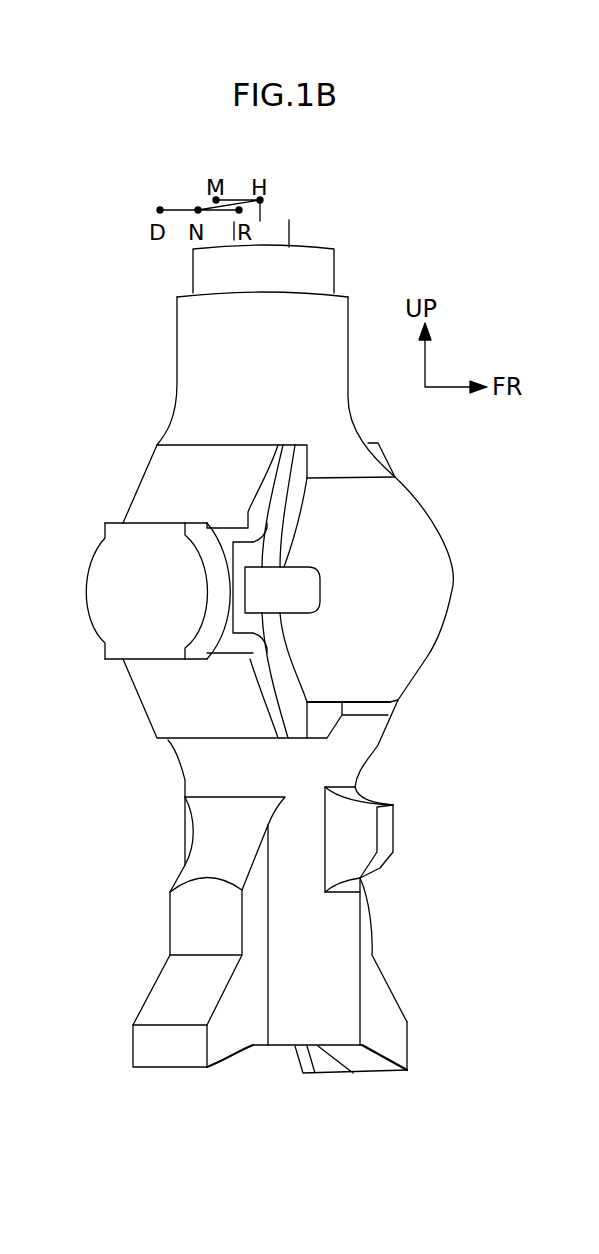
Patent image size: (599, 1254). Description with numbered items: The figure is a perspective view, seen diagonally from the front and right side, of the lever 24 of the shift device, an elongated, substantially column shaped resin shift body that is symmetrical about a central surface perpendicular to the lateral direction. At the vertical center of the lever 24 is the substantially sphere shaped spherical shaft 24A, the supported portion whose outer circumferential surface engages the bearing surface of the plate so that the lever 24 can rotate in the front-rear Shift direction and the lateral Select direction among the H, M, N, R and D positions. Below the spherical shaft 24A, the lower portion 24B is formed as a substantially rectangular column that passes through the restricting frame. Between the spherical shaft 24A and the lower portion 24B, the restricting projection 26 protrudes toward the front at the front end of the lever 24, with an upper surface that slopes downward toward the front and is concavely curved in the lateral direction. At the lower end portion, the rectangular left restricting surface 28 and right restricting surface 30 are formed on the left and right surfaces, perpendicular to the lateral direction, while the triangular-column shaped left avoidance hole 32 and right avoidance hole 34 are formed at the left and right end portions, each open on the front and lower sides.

The lever 24 is at (177, 322).
The spherical shaft 24A is at (156, 470).
The lower portion 24B is at (187, 919).
The restricting projection 26 is at (396, 830).
The left restricting surface 28 is at (409, 1036).
The right restricting surface 30 is at (133, 1042).
The left avoidance hole 32 is at (378, 1065).
The right avoidance hole 34 is at (236, 1055).